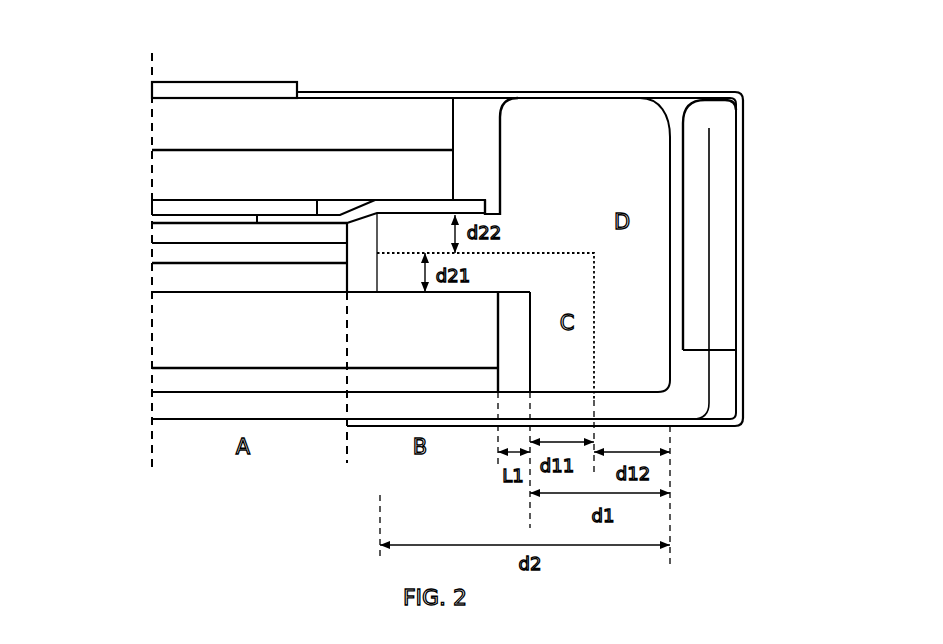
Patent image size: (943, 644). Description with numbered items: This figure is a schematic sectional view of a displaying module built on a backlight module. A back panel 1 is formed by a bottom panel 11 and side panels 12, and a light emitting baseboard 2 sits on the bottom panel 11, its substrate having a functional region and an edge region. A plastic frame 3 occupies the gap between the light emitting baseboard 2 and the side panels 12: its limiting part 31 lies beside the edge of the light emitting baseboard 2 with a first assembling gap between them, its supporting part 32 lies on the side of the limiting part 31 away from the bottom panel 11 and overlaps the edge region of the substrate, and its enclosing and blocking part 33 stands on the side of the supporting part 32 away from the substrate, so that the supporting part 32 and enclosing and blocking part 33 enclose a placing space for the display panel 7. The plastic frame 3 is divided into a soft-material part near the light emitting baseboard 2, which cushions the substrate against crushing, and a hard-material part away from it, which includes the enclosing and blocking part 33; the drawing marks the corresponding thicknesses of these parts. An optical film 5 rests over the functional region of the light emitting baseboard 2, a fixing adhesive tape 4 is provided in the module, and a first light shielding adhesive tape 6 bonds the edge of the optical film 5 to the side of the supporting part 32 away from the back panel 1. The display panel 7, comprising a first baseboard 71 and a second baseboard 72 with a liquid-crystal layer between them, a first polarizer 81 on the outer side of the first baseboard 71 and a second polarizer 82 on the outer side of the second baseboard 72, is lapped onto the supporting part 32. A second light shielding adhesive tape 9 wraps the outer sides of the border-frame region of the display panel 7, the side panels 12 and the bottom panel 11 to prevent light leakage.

The back panel 1 is at (746, 193).
The light emitting baseboard 2 is at (167, 332).
The plastic frame 3 is at (684, 343).
The fixing adhesive tape 4 is at (170, 384).
The optical film 5 is at (143, 223).
The first light shielding adhesive tape 6 is at (462, 210).
The display panel 7 is at (239, 149).
The second light shielding adhesive tape 9 is at (660, 93).
The bottom panel 11 is at (197, 404).
The side panels 12 is at (695, 285).
The limiting part 31 is at (603, 375).
The supporting part 32 is at (415, 235).
The enclosing and blocking part 33 is at (563, 127).
The first baseboard 71 is at (185, 171).
The second baseboard 72 is at (183, 110).
The first polarizer 81 is at (170, 212).
The second polarizer 82 is at (202, 87).